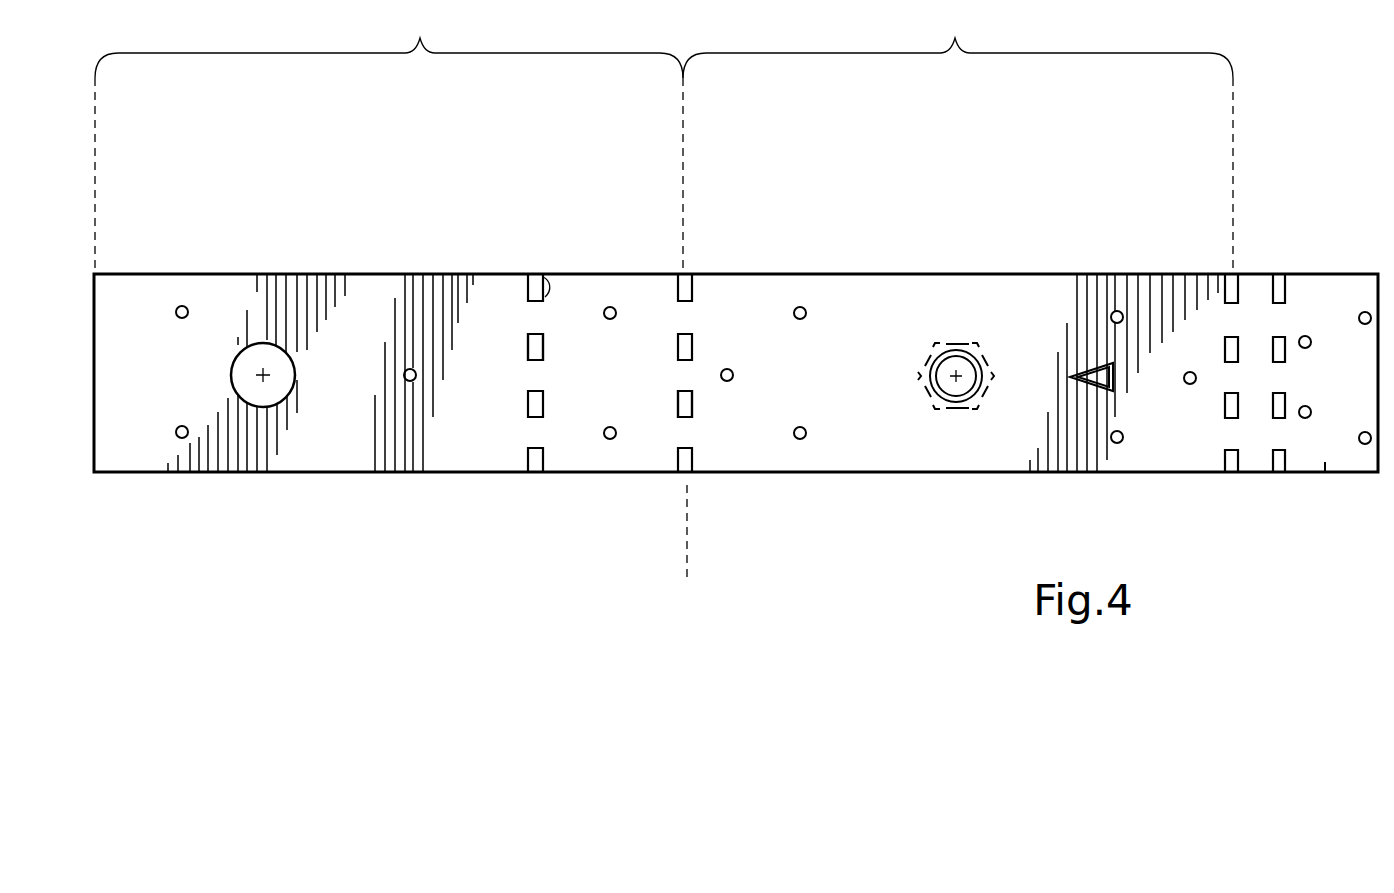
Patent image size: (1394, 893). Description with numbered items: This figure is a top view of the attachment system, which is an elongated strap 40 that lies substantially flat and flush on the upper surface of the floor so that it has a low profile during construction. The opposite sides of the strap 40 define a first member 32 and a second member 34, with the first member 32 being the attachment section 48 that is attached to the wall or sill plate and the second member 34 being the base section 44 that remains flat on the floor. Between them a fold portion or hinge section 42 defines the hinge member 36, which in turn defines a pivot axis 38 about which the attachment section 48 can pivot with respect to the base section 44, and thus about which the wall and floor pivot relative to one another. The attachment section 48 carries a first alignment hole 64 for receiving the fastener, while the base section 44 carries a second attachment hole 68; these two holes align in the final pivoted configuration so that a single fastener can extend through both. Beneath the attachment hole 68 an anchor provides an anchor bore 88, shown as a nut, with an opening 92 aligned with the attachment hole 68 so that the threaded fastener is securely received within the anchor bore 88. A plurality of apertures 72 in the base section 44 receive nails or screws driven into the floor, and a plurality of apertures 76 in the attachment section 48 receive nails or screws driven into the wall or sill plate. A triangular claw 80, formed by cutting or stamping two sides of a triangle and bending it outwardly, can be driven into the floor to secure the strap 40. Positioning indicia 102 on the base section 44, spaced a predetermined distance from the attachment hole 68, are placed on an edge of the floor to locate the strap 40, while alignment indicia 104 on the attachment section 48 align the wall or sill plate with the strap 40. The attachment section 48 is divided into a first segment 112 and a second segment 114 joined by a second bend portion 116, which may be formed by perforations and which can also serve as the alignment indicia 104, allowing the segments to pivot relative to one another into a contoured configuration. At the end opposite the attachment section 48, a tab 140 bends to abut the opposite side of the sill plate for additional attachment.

The attachment section 48 is at (389, 141).
The base section 44 is at (958, 140).
The first alignment hole 64 is at (240, 355).
The apertures 76 is at (413, 345).
The first segment 112 is at (506, 276).
The second bend portion 116 is at (552, 276).
The second segment 114 is at (568, 276).
The hinge section 42 is at (682, 320).
The alignment indicia 104 is at (543, 457).
The hinge member 36 is at (670, 428).
The pivot axis 38 is at (687, 558).
The second attachment hole 68 is at (963, 350).
The opening 92 is at (942, 403).
The anchor bore 88 is at (922, 385).
The second member 34 is at (997, 443).
The claws 80 is at (1103, 363).
The apertures 72 is at (1117, 444).
The positioning indicia 102 is at (1223, 462).
The tab 140 is at (1325, 462).
The first member 32 is at (293, 452).
The strap 40 is at (451, 501).